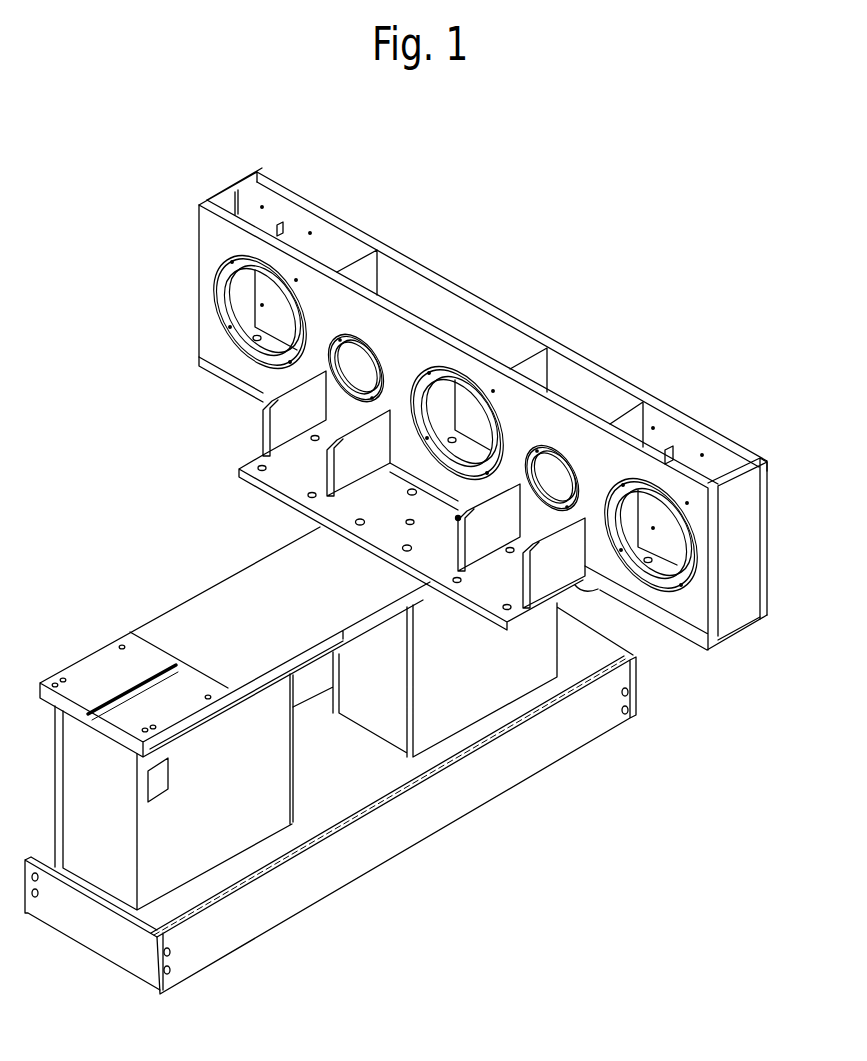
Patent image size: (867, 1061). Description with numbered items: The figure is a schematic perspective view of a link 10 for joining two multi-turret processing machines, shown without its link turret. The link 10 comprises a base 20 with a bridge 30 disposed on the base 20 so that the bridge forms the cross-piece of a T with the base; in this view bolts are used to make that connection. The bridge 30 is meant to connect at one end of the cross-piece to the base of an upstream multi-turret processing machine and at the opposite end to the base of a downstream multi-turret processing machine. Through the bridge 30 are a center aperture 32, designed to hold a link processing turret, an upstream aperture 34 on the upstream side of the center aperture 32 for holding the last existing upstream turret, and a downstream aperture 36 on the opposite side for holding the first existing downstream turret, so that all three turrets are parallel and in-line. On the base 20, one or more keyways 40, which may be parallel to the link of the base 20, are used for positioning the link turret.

The link 10 is at (635, 298).
The base 20 is at (200, 605).
The bridge 30 is at (768, 522).
The center aperture 32 is at (468, 408).
The upstream aperture 34 is at (242, 292).
The downstream aperture 36 is at (670, 555).
The keyways 40 is at (125, 685).